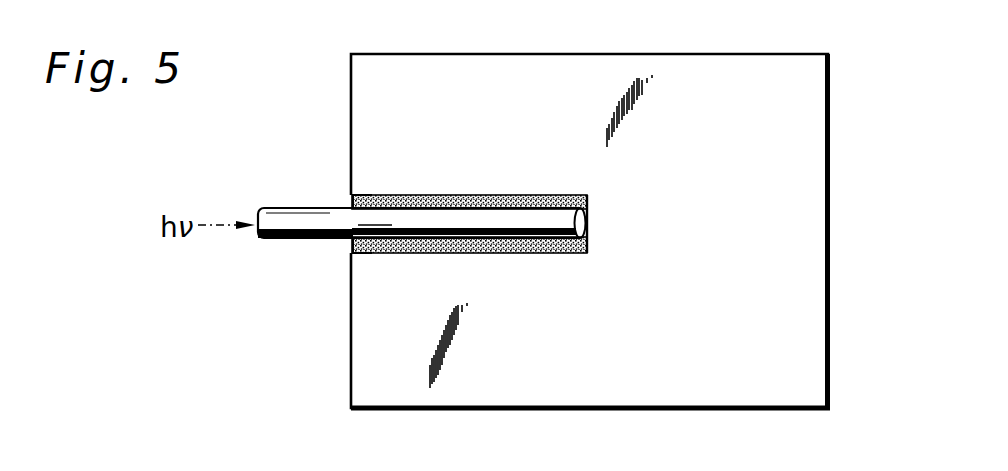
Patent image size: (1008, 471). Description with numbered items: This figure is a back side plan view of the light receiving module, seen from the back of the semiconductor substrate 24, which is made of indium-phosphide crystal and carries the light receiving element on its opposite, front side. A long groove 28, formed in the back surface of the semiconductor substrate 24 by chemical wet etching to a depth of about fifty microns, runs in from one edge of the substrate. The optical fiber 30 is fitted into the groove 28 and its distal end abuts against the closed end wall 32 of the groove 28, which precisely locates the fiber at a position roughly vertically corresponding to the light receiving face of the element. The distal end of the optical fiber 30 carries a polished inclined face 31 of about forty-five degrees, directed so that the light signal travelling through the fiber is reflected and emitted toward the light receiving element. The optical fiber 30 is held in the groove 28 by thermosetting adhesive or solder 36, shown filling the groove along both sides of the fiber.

The semiconductor substrate 24 is at (813, 158).
The groove 28 is at (458, 196).
The optical fiber 30 is at (303, 229).
The inclined face 31 is at (586, 222).
The closed end wall 32 is at (580, 252).
The thermosetting adhesive or solder 36 is at (368, 196).